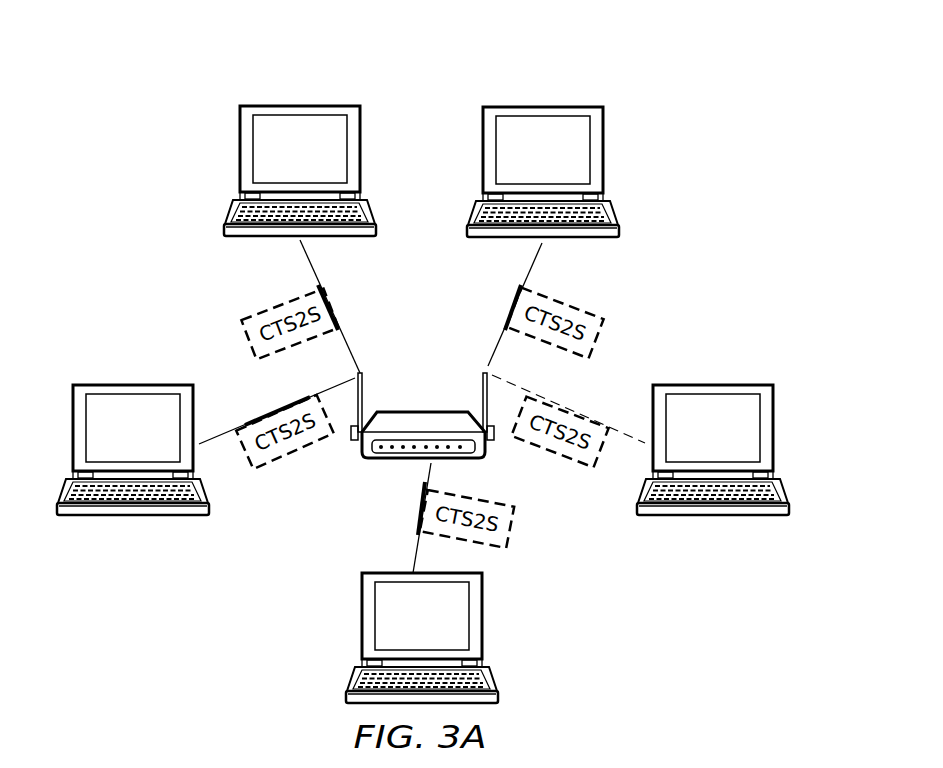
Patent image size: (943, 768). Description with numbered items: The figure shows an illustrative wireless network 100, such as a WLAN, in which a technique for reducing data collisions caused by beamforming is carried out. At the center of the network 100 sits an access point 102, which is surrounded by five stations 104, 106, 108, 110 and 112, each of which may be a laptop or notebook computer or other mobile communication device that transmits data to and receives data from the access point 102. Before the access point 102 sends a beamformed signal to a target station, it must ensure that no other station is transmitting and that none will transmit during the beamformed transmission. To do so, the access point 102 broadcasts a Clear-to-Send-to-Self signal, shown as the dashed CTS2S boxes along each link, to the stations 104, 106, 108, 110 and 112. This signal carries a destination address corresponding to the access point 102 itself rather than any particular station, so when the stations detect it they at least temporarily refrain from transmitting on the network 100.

The wireless network 100 is at (678, 73).
The access point 102 is at (420, 412).
The station 104 is at (131, 384).
The station 106 is at (298, 105).
The station 108 is at (545, 106).
The station 110 is at (712, 384).
The station 112 is at (361, 626).